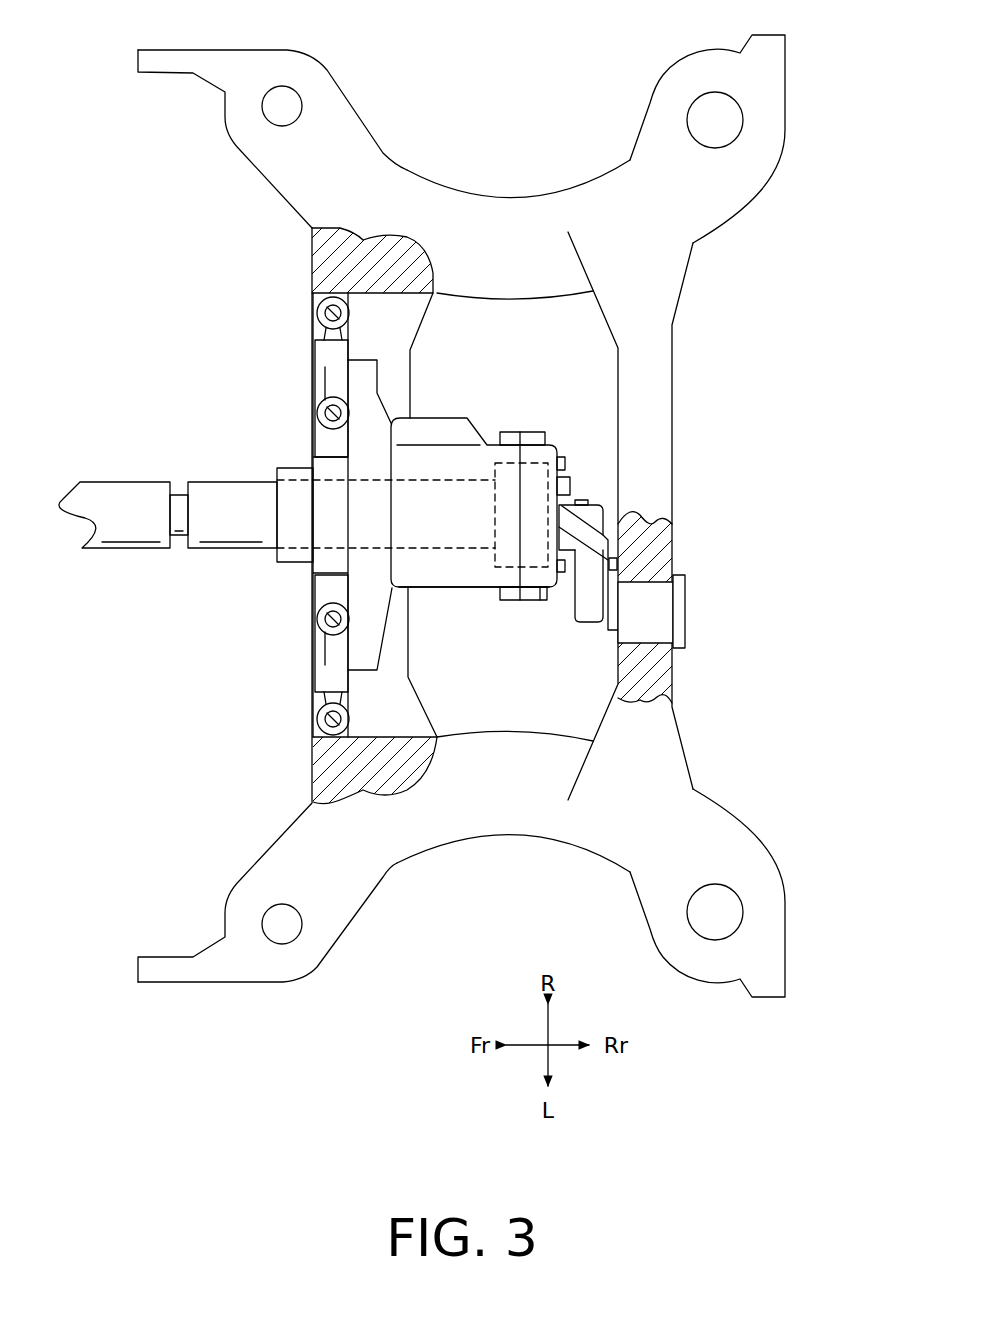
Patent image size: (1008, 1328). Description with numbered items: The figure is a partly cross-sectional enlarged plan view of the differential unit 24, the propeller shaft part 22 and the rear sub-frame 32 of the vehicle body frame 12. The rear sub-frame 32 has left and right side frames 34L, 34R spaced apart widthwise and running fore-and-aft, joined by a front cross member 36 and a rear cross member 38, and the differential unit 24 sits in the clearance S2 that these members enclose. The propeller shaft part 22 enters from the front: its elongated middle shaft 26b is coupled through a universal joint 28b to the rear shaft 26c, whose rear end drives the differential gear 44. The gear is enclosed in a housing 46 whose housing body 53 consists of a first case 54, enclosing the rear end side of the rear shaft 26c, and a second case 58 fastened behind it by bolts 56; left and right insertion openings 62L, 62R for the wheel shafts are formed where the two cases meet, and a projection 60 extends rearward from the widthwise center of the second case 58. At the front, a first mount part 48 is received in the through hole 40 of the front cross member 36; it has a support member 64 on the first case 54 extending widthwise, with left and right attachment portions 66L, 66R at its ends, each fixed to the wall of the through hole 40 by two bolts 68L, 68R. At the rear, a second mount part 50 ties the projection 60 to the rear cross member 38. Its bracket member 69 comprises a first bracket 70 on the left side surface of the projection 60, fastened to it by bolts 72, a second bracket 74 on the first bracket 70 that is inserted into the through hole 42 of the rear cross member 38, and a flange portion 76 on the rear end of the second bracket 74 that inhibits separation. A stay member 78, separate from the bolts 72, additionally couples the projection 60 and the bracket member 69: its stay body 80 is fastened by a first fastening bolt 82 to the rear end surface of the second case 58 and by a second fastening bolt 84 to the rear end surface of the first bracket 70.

The vehicle body frame 12 is at (666, 68).
The propeller shaft part 22 is at (133, 557).
The differential unit 24 is at (522, 380).
The middle shaft 26b is at (127, 481).
The rear shaft 26c is at (218, 481).
The universal joint 28b is at (180, 493).
The rear sub-frame 32 is at (788, 68).
The right side frame 34R is at (502, 197).
The left side frame 34L is at (490, 835).
The front cross member 36 is at (310, 767).
The rear cross member 38 is at (673, 378).
The through hole 40 is at (400, 296).
The through hole 42 is at (650, 642).
The differential gear 44 is at (491, 572).
The housing 46 is at (462, 413).
The first mount part 48 is at (382, 376).
The second mount part 50 is at (688, 647).
The housing body 53 is at (427, 588).
The first case 54 is at (457, 590).
The bolts 56 is at (567, 458).
The second case 58 is at (550, 600).
The projection 60 is at (600, 522).
The right insertion opening 62R is at (514, 431).
The left insertion opening 62L is at (512, 602).
The support member 64 is at (378, 414).
The right attachment portion 66R is at (320, 353).
The left attachment portion 66L is at (320, 676).
The bolts 68R is at (322, 308).
The bolts 68L is at (320, 618).
The bracket member 69 is at (678, 652).
The first bracket 70 is at (583, 617).
The bolts 72 is at (587, 527).
The second bracket 74 is at (662, 592).
The flange portion 76 is at (682, 603).
The stay member 78 is at (655, 537).
The stay body 80 is at (605, 543).
The first fastening bolt 82 is at (571, 484).
The second fastening bolt 84 is at (616, 565).
The clearance S2 is at (560, 720).